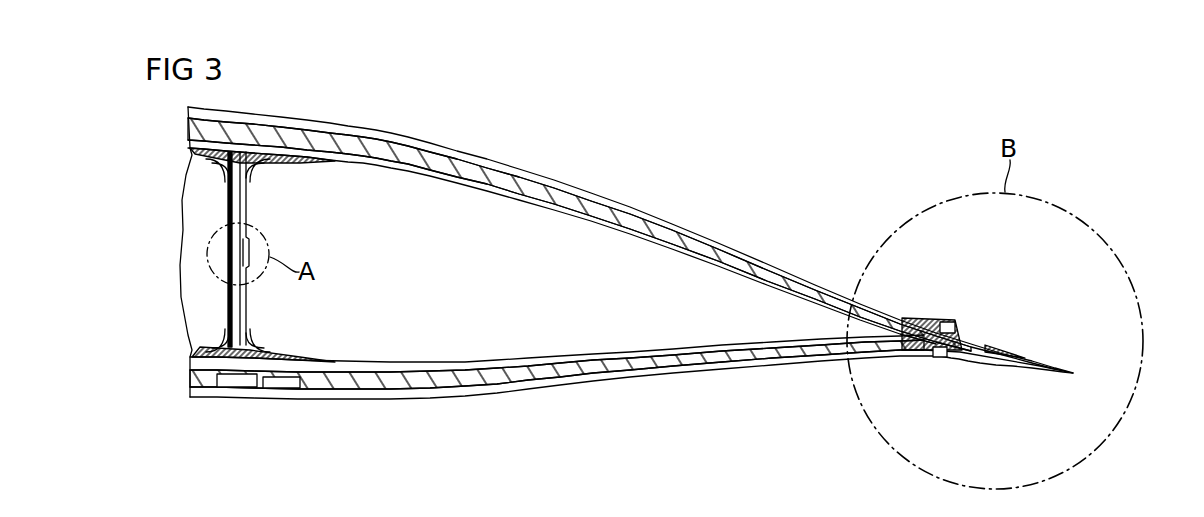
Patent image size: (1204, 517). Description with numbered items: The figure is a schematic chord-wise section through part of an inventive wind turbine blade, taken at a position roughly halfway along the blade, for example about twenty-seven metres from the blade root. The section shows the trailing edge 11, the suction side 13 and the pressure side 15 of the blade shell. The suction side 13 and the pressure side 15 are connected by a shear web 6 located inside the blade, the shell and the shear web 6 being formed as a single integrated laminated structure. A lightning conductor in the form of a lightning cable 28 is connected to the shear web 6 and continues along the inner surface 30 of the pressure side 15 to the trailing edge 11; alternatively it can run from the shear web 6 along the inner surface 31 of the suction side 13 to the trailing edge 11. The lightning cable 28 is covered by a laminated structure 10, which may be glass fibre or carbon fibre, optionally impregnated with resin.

The shear web 6 is at (229, 198).
The laminated structure 10 is at (243, 187).
The trailing edge 11 is at (1073, 374).
The suction side 13 is at (420, 140).
The pressure side 15 is at (410, 399).
The lightning cable 28 is at (258, 345).
The inner surface of the pressure side 30 is at (370, 360).
The inner surface of the suction side 31 is at (430, 177).